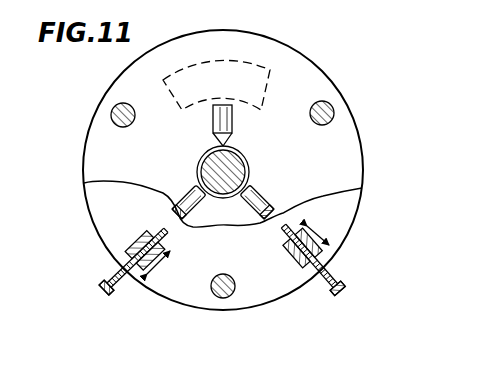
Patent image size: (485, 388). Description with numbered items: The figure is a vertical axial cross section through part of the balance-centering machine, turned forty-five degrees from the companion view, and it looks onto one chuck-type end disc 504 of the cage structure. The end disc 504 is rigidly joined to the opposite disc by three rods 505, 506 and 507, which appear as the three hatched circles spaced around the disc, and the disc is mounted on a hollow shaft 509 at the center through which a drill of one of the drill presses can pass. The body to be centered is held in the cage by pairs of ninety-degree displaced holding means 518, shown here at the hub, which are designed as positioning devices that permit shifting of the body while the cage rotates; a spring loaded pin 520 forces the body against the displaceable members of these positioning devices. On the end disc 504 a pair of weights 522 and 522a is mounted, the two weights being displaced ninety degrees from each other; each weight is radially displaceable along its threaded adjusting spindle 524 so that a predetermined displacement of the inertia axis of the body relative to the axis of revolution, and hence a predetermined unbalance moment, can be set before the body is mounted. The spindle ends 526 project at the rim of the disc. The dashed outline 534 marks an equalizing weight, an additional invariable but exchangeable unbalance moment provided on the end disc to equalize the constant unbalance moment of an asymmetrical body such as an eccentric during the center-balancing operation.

The chuck-type end disc 504 is at (311, 72).
The rod 505 is at (327, 101).
The rod 506 is at (118, 127).
The rod 507 is at (236, 278).
The hollow shaft 509 is at (198, 161).
The holding means 518 is at (185, 197).
The spring loaded pin 520 is at (233, 122).
The weight 522 is at (296, 262).
The weight 522a is at (137, 240).
The adjusting spindle 524 is at (343, 285).
The screw head 526 is at (104, 287).
The equalizing weight 534 is at (276, 72).